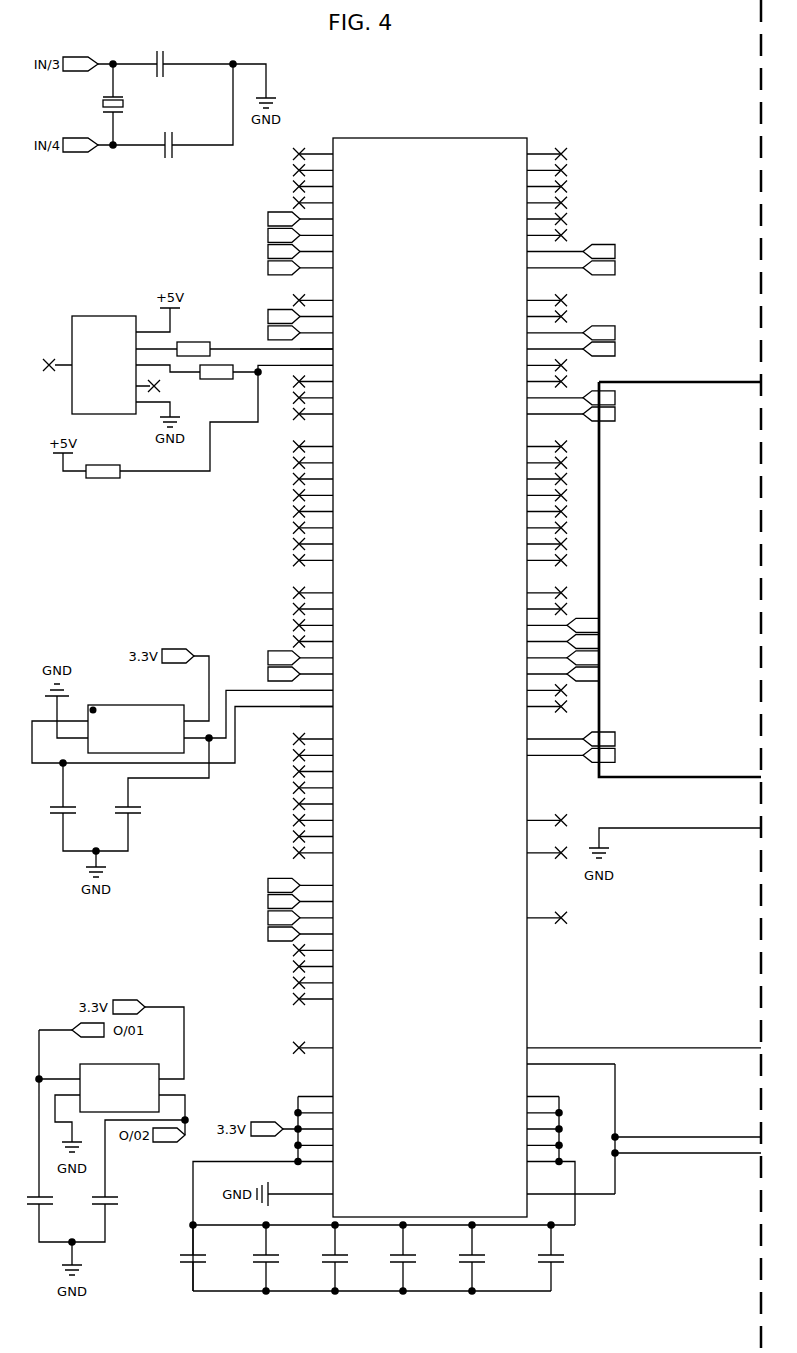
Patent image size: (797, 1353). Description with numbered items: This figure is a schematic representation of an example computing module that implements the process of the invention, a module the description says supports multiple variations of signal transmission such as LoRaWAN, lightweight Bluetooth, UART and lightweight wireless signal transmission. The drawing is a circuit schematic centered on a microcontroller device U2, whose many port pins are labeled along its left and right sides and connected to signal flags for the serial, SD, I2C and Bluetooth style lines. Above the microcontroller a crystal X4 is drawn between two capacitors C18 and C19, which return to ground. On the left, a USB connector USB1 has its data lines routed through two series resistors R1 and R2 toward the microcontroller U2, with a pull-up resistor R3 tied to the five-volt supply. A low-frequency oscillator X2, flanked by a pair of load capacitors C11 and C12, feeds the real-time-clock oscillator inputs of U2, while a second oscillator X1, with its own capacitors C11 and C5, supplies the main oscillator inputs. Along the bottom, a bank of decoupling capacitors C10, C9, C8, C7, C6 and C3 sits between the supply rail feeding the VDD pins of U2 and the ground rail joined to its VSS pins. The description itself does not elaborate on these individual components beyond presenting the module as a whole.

The STM32F103VDT6 microcontroller U2 is at (485, 660).
The 100nF capacitor C18 is at (186, 65).
The 100nF capacitor C19 is at (193, 147).
The 32.768KHz crystal X4 is at (151, 105).
The USB connector 1734035-1 USB1 is at (101, 349).
The 20 ohm resistor R1 is at (193, 334).
The 20 ohm resistor R2 is at (216, 390).
The 4.7K resistor R3 is at (103, 454).
The 32.768KHz oscillator X2 is at (138, 712).
The 22pF capacitor C11 is at (69, 1014).
The 22pF capacitor C12 is at (146, 820).
The 8MHz oscillator X1 is at (120, 1077).
The 22pF capacitor C5 is at (122, 1207).
The 100nF capacitor C10 is at (214, 1266).
The 100nF capacitor C9 is at (287, 1266).
The 100nF capacitor C8 is at (356, 1266).
The 100nF capacitor C7 is at (424, 1266).
The 100nF capacitor C6 is at (493, 1266).
The 100nF capacitor C3 is at (572, 1266).